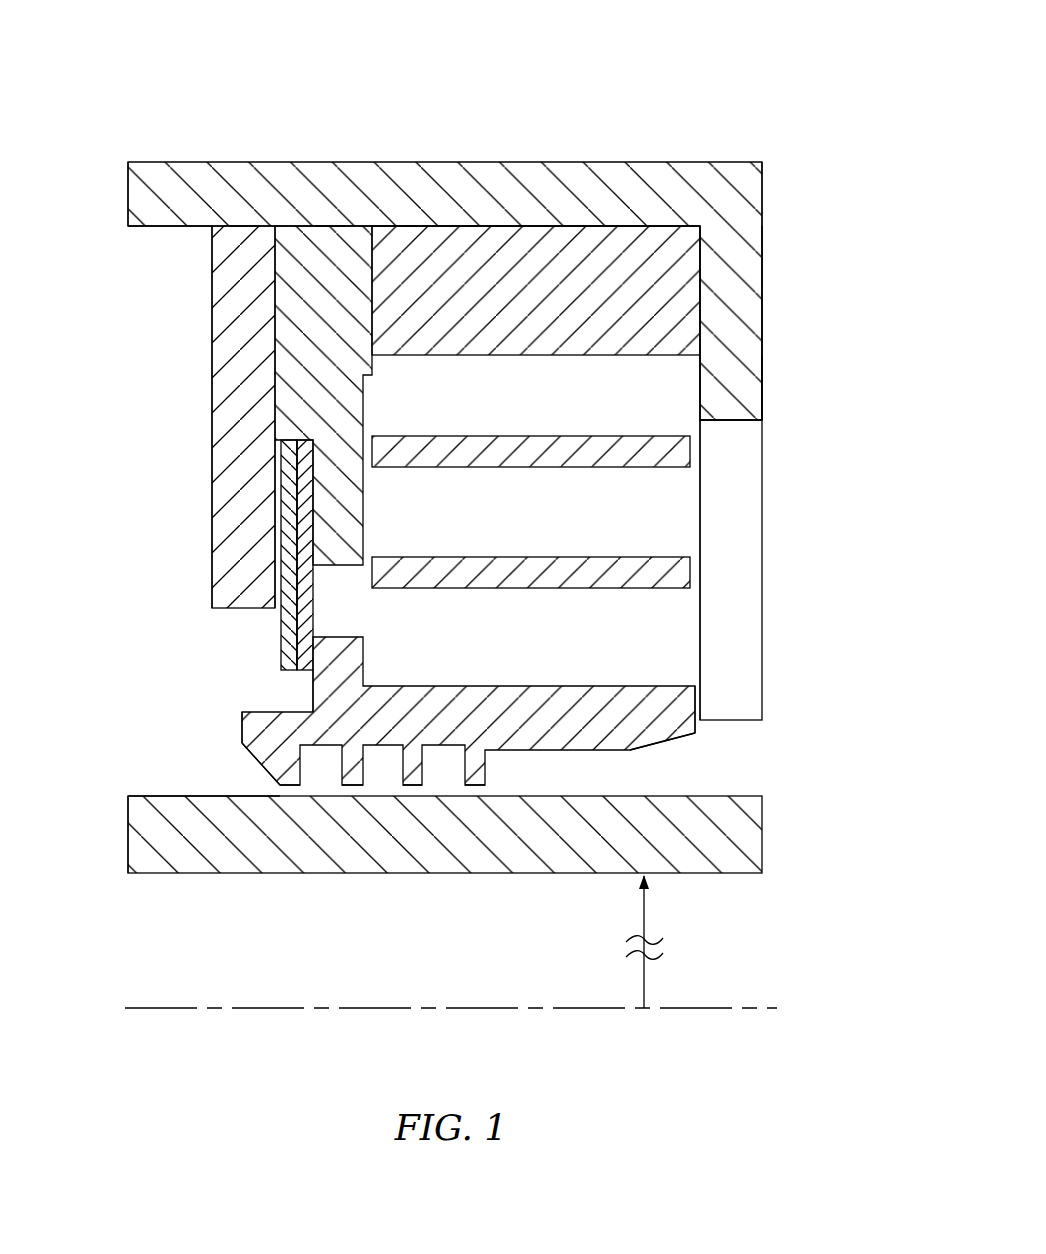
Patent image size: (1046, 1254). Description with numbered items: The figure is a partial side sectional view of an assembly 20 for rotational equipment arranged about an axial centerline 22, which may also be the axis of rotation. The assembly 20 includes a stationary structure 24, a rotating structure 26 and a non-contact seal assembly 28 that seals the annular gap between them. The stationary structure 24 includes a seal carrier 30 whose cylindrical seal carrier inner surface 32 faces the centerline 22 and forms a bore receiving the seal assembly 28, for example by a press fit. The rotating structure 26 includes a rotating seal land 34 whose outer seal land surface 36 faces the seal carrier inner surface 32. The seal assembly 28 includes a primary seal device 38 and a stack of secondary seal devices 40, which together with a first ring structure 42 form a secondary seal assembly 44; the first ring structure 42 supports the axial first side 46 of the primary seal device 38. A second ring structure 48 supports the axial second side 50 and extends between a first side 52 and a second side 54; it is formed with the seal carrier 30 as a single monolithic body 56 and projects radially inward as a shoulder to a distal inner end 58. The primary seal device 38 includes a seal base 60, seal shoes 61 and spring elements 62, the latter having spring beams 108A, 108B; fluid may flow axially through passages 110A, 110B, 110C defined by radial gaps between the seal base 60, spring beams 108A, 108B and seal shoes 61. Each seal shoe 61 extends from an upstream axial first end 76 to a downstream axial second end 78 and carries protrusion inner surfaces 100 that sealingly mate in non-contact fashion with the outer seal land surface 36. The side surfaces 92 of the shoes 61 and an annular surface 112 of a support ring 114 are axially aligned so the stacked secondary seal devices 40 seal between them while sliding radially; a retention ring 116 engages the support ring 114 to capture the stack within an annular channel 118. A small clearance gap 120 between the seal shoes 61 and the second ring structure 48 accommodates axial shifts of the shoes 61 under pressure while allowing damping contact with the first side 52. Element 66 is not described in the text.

The assembly for rotational equipment 20 is at (778, 103).
The axial centerline 22 is at (765, 1012).
The stationary structure 24 is at (168, 158).
The rotating structure 26 is at (158, 879).
The seal assembly 28 is at (156, 387).
The seal carrier 30 is at (128, 186).
The seal carrier inner surface 32 is at (157, 228).
The rotating seal land 34 is at (128, 840).
The outer seal land surface 36 is at (150, 796).
The primary seal device 38 is at (568, 220).
The secondary seal devices 40 is at (290, 617).
The first ring structure 42 is at (203, 326).
The secondary seal assembly 44 is at (156, 660).
The axial first side 46 is at (372, 265).
The second ring structure 48 is at (774, 320).
The axial second side 50 is at (700, 267).
The first side 52 is at (700, 370).
The second side 54 is at (762, 360).
The monolithic body 56 is at (774, 192).
The distal inner end 58 is at (762, 720).
The seal base 60 is at (485, 226).
The seal shoes 61 is at (247, 770).
The spring elements 62 is at (686, 604).
The interface layer 66 is at (417, 226).
The axial first end 76 is at (242, 728).
The axial second end 78 is at (697, 733).
The side surface 92 is at (313, 690).
The protrusion inner surface 100 is at (343, 787).
The spring beam 108A is at (533, 436).
The spring beam 108B is at (513, 557).
The passage 110A is at (465, 403).
The passage 110B is at (475, 517).
The passage 110C is at (462, 650).
The annular surface 112 is at (298, 542).
The secondary seal device support ring 114 is at (330, 226).
The retention ring 116 is at (245, 226).
The annular channel 118 is at (268, 476).
The clearance gap 120 is at (690, 674).